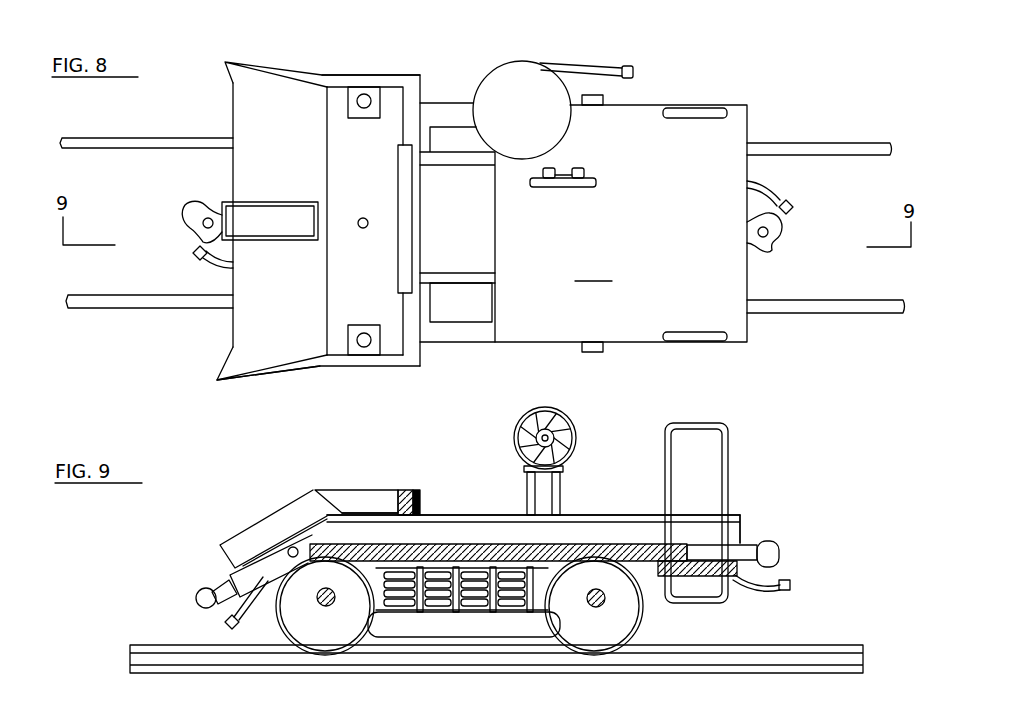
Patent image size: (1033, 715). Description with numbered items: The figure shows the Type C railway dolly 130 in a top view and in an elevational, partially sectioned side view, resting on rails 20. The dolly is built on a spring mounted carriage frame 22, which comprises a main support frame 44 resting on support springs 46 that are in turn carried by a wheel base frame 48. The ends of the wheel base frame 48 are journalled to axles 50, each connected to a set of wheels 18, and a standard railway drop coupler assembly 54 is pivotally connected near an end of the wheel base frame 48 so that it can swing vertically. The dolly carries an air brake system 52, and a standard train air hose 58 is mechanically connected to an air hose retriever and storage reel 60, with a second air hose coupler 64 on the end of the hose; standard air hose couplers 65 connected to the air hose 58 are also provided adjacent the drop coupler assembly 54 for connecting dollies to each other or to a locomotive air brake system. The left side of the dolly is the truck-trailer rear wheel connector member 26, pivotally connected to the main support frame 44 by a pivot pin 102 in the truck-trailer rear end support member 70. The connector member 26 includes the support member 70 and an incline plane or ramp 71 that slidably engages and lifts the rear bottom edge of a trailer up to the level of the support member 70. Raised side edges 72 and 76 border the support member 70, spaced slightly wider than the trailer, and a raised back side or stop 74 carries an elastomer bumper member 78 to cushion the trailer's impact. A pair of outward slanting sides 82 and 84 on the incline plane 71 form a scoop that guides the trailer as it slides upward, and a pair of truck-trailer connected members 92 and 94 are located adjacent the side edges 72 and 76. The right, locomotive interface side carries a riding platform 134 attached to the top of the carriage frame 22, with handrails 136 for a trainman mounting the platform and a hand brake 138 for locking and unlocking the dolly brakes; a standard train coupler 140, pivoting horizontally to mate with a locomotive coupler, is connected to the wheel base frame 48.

In FIG. 9, the wheels 18 is at (336, 655).
In FIG. 8, the rail 20 is at (137, 138).
In FIG. 9, the rail 20 is at (825, 648).
In FIG. 9, the spring mounted carriage frame 22 is at (457, 513).
In FIG. 9, the truck-trailer rear wheel connector member 26 is at (254, 536).
In FIG. 9, the main support frame 44 is at (535, 570).
In FIG. 9, the support springs 46 is at (520, 598).
In FIG. 9, the wheel base frame 48 is at (490, 627).
In FIG. 8, the axles 50 is at (603, 95).
In FIG. 9, the axles 50 is at (328, 605).
In FIG. 8, the air brake system 52 is at (465, 156).
In FIG. 8, the railway drop coupler assembly 54 is at (198, 208).
In FIG. 9, the railway drop coupler assembly 54 is at (205, 589).
In FIG. 8, the standard train air hose 58 is at (208, 262).
In FIG. 9, the standard train air hose 58 is at (241, 620).
In FIG. 8, the air hose retriever and storage reel 60 is at (492, 73).
In FIG. 8, the second air hose coupler 64 is at (630, 66).
In FIG. 8, the standard air hose coupler 65 is at (192, 250).
In FIG. 9, the standard air hose coupler 65 is at (226, 624).
In FIG. 8, the truck-trailer rear end support member 70 is at (327, 172).
In FIG. 9, the truck-trailer rear end support member 70 is at (348, 490).
In FIG. 8, the incline plane or ramp 71 is at (234, 110).
In FIG. 9, the incline plane or ramp 71 is at (228, 556).
In FIG. 8, the raised side edge 72 is at (343, 368).
In FIG. 8, the raised back side or stop 74 is at (421, 222).
In FIG. 9, the raised back side or stop 74 is at (418, 505).
In FIG. 8, the raised side edge 76 is at (368, 76).
In FIG. 9, the raised side edge 76 is at (387, 489).
In FIG. 8, the elastomer bumper member 78 is at (399, 178).
In FIG. 9, the elastomer bumper member 78 is at (405, 490).
In FIG. 8, the outward slanting side 82 is at (218, 382).
In FIG. 8, the outward slanting side 84 is at (226, 61).
In FIG. 9, the outward slanting side 84 is at (222, 542).
In FIG. 8, the truck-trailer connected member 92 is at (370, 118).
In FIG. 8, the truck-trailer connected member 94 is at (370, 323).
In FIG. 8, the pivot pin 102 is at (363, 229).
In FIG. 8, the railway dolly 130 is at (619, 211).
In FIG. 9, the railway dolly 130 is at (779, 470).
In FIG. 8, the riding platform 134 is at (762, 101).
In FIG. 9, the riding platform 134 is at (617, 515).
In FIG. 8, the handrails 136 is at (690, 118).
In FIG. 9, the handrails 136 is at (728, 440).
In FIG. 8, the hand brake 138 is at (578, 190).
In FIG. 9, the hand brake 138 is at (581, 428).
In FIG. 8, the standard train coupler 140 is at (785, 240).
In FIG. 9, the standard train coupler 140 is at (770, 545).